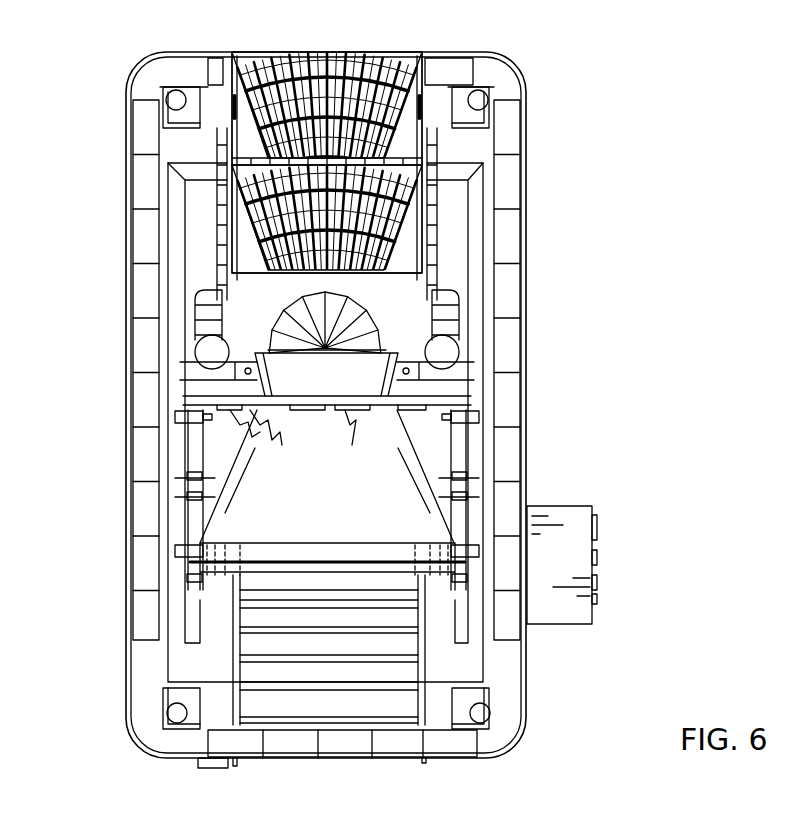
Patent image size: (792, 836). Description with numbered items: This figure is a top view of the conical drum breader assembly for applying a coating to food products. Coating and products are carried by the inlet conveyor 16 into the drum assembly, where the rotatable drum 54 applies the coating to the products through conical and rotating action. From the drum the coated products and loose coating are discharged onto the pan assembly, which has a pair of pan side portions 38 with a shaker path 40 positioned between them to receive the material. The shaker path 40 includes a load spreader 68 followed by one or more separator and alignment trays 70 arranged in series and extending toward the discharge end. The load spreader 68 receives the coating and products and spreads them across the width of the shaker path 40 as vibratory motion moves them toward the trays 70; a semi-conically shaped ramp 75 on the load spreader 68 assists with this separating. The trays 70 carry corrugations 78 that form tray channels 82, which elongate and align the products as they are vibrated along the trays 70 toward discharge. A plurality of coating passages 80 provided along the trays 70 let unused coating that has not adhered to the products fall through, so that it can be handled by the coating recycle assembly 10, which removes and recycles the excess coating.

The coating recycle assembly 10 is at (134, 57).
The inlet conveyor 16 is at (338, 705).
The pan side portions 38 is at (428, 100).
The shaker path 40 is at (246, 255).
The rotatable drum 54 is at (405, 458).
The load spreader 68 is at (248, 287).
The separator and/or alignment trays 70 is at (403, 148).
The semi-conically shaped ramp 75 is at (365, 343).
The corrugations 78 is at (327, 93).
The coating passages 80 is at (251, 180).
The tray channels 82 is at (264, 68).